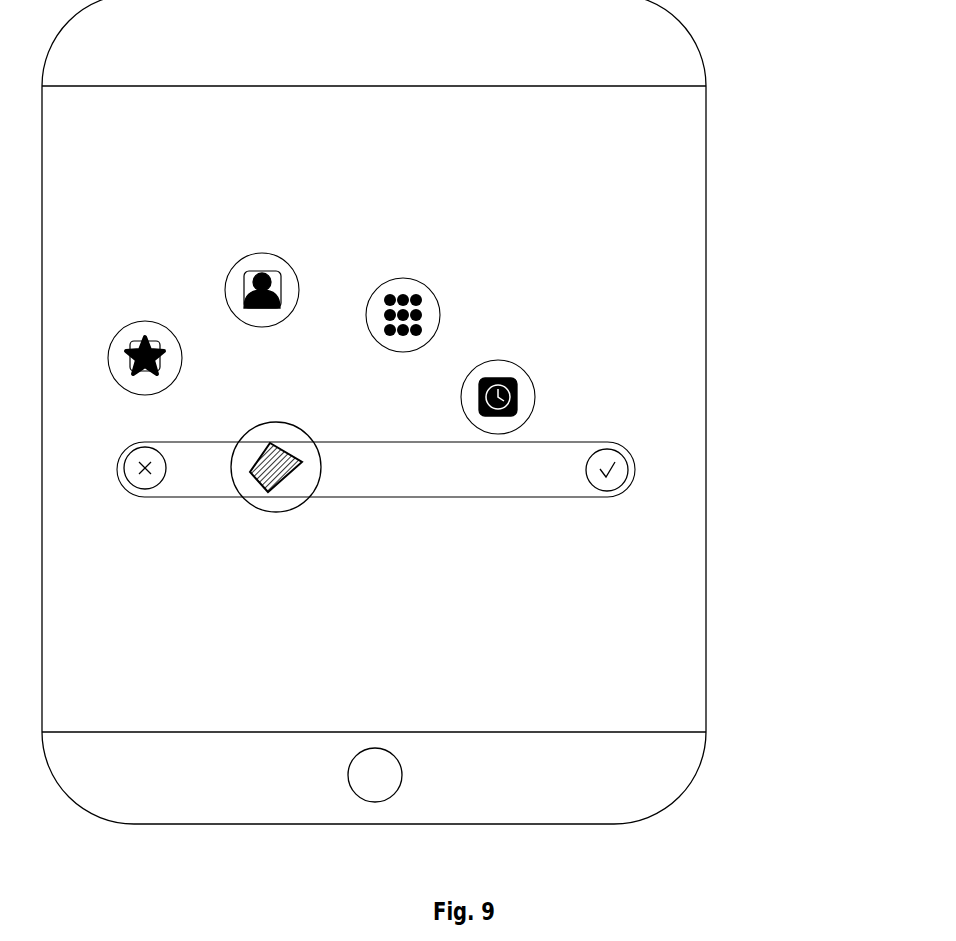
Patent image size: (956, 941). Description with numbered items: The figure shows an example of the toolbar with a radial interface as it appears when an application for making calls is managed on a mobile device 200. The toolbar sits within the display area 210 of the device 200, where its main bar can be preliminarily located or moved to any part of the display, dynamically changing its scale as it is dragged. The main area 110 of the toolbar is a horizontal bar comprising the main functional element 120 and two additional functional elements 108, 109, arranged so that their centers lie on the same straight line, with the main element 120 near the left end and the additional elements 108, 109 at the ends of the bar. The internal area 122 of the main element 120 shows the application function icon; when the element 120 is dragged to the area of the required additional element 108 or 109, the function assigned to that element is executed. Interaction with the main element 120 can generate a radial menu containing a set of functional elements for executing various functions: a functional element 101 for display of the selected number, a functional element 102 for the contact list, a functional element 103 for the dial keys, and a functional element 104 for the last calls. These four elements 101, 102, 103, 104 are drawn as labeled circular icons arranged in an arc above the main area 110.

The mobile device 200 is at (706, 207).
The display area 210 is at (680, 599).
The functional element for display of selected number 101 is at (182, 360).
The functional element for the contact list 102 is at (272, 326).
The functional element for the dial keys 103 is at (390, 349).
The functional element for the last calls 104 is at (465, 383).
The additional functional element 108 is at (140, 484).
The additional functional element 109 is at (603, 488).
The main area 110 is at (420, 497).
The main functional element 120 is at (248, 503).
The internal area 122 is at (285, 493).